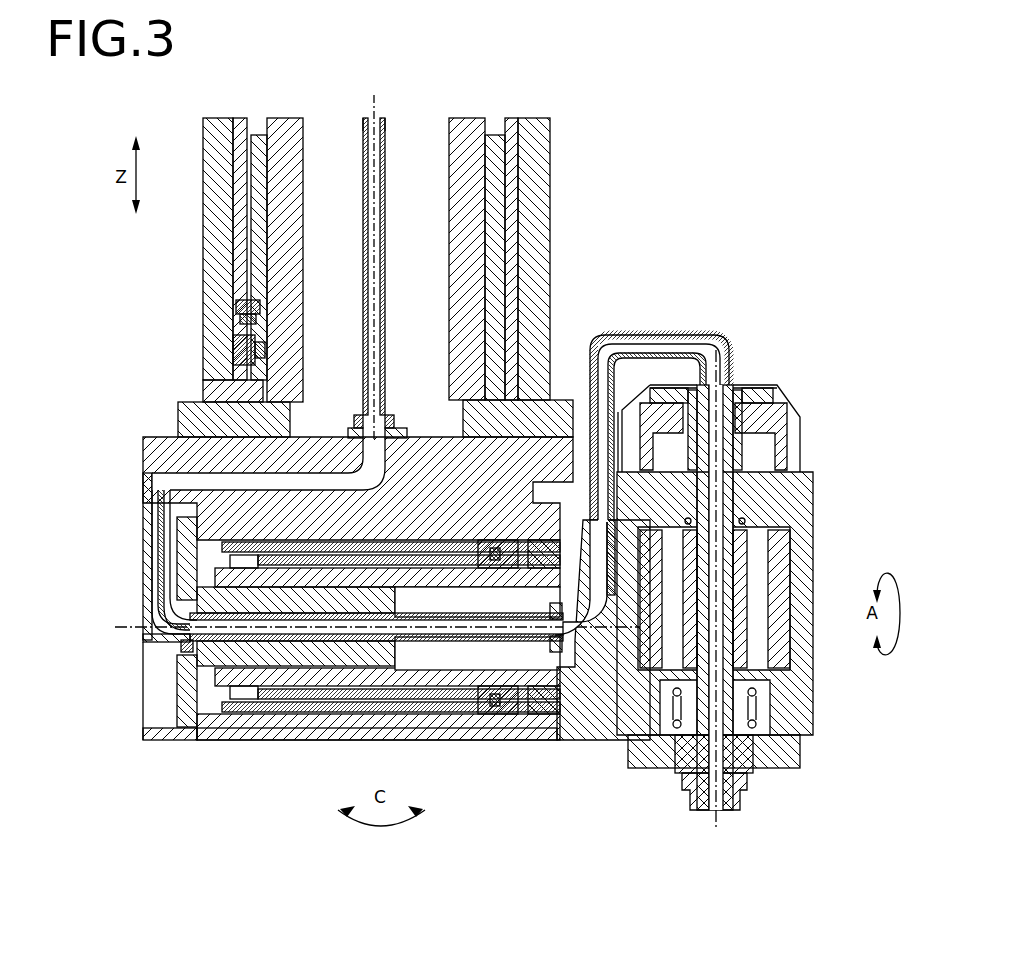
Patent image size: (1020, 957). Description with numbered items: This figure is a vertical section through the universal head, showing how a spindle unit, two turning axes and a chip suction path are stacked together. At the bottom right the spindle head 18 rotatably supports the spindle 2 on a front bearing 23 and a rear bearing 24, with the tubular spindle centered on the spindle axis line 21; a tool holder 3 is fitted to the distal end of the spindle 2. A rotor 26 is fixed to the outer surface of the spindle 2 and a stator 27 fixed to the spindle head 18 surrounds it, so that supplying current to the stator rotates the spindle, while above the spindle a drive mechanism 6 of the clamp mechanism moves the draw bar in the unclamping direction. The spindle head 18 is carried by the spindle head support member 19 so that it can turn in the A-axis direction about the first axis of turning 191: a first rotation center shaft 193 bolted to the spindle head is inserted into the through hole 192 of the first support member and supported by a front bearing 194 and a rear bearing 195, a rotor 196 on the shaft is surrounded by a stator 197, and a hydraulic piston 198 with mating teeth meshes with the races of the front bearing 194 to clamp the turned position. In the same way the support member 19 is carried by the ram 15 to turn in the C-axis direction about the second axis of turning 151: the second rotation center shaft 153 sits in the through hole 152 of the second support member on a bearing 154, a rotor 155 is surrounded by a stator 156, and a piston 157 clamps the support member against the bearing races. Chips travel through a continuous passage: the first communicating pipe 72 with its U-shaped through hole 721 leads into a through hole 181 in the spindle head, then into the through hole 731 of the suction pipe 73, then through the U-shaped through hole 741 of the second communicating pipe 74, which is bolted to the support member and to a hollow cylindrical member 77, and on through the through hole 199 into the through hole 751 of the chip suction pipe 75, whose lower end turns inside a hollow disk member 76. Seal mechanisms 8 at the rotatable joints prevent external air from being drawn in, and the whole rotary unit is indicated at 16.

The spindle 2 is at (745, 768).
The tool holder 3 is at (690, 800).
The drive mechanism (cylinder mechanism) 6 is at (785, 384).
The seal mechanism 8 is at (356, 425).
The ram (second support member) 15 is at (540, 160).
The rotary unit 16 is at (289, 768).
The spindle head 18 is at (606, 745).
The spindle head support member (first support member) 19 is at (155, 441).
The spindle axis line 21 is at (719, 822).
The front bearing 23 is at (760, 691).
The rear bearing 24 is at (746, 523).
The rotor 26 is at (756, 585).
The stator 27 is at (786, 625).
The first communicating pipe 72 is at (603, 341).
The suction pipe on the first support member side 73 is at (485, 640).
The second communicating pipe 74 is at (150, 500).
The chip suction pipe on the second support member side 75 is at (386, 197).
The hollow disk member 76 is at (397, 425).
The hollow cylindrical member 77 is at (397, 598).
The second axis of turning 151 is at (386, 109).
The through hole of the second support member 152 is at (515, 197).
The second rotation center shaft 153 is at (285, 132).
The bearing 154 is at (215, 384).
The rotor 155 is at (240, 309).
The stator 156 is at (236, 278).
The piston 157 is at (236, 356).
The through hole 181 is at (550, 598).
The first axis of turning 191 is at (125, 640).
The through hole of the first support member 192 is at (152, 742).
The first rotation center shaft 193 is at (381, 740).
The front bearing 194 is at (543, 740).
The rear bearing 195 is at (225, 740).
The rotor 196 is at (428, 740).
The stator 197 is at (335, 740).
The piston 198 is at (500, 740).
The through hole 199 is at (305, 495).
The through hole 721 is at (674, 348).
The through hole 731 is at (438, 628).
The through hole 741 is at (155, 560).
The through hole 751 is at (365, 291).